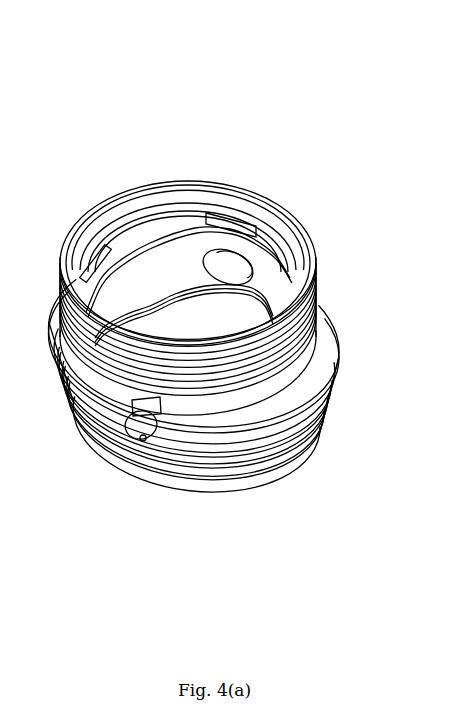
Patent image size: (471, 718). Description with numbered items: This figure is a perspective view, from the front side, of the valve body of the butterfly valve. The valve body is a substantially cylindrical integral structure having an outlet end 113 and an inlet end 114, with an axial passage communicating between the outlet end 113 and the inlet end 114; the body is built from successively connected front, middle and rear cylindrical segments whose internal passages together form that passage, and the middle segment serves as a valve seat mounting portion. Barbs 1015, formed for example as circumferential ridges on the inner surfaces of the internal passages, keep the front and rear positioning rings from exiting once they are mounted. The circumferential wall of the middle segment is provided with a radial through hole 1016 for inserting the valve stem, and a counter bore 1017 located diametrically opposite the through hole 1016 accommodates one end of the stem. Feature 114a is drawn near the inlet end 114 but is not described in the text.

The outlet end 113 is at (112, 183).
The inlet end 114 is at (252, 473).
The inner ring 114a is at (172, 236).
The barbs 1015 is at (224, 216).
The radial through hole 1016 is at (232, 262).
The counter bore 1017 is at (140, 424).